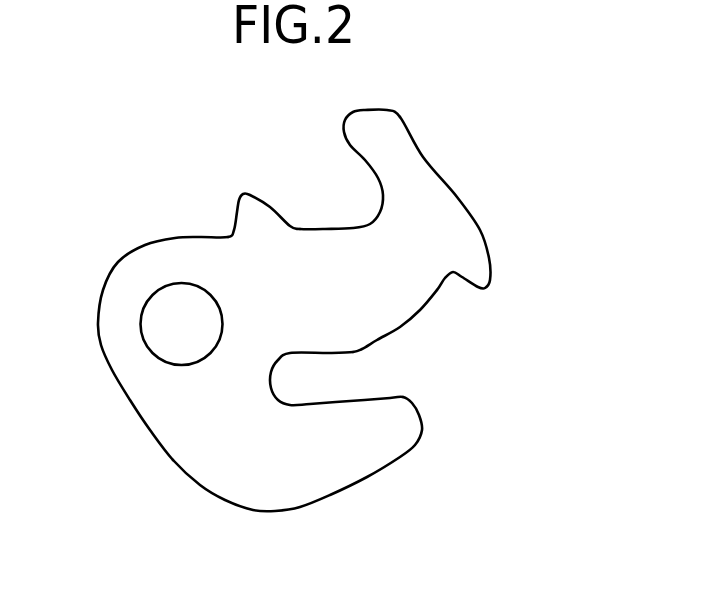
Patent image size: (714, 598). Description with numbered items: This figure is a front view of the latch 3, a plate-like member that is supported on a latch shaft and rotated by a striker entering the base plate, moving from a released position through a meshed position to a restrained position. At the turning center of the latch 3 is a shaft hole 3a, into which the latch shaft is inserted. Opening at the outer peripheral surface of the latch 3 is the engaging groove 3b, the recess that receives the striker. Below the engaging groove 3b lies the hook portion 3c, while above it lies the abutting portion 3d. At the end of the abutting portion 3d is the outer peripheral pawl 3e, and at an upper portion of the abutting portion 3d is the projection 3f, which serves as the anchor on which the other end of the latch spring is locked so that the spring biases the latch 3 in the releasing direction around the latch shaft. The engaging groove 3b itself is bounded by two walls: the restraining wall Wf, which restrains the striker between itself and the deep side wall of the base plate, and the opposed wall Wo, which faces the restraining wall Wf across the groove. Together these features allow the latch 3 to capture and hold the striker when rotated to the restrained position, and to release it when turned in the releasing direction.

The latch 3 is at (324, 333).
The shaft hole 3a is at (190, 362).
The engaging groove 3b is at (538, 323).
The hook portion 3c is at (362, 467).
The abutting portion 3d is at (387, 313).
The outer peripheral pawl 3e is at (480, 267).
The projection 3f is at (245, 215).
The opposed wall Wo is at (332, 357).
The restraining wall Wf is at (367, 398).